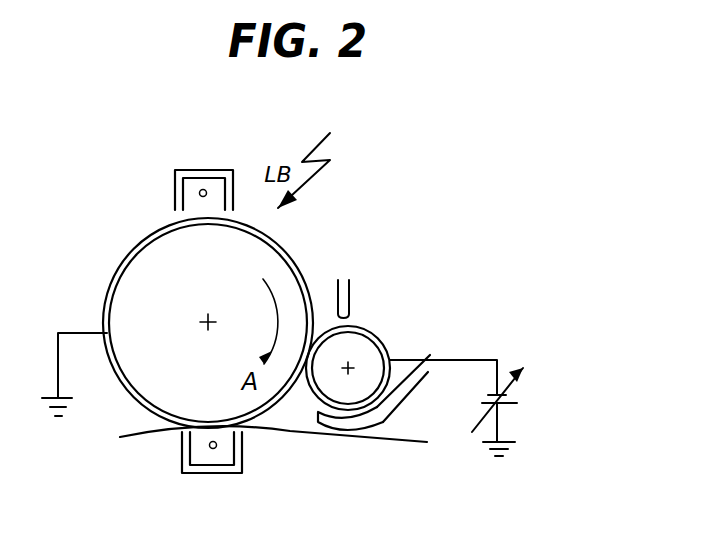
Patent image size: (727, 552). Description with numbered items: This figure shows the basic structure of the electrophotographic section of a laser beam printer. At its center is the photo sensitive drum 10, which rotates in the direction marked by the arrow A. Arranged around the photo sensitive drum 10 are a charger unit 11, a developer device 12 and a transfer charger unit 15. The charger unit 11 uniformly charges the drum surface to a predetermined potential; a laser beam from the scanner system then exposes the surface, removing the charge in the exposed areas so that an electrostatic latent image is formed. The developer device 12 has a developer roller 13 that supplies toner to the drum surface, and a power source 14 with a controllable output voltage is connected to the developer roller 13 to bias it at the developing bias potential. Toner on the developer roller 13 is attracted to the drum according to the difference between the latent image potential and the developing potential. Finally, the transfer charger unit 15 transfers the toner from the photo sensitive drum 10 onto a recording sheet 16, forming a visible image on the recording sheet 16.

The photo sensitive drum 10 is at (137, 253).
The charger unit 11 is at (200, 170).
The developer device 12 is at (408, 397).
The developer roller 13 is at (373, 418).
The power source 14 is at (510, 417).
The transfer charger unit 15 is at (207, 477).
The recording sheet 16 is at (303, 438).